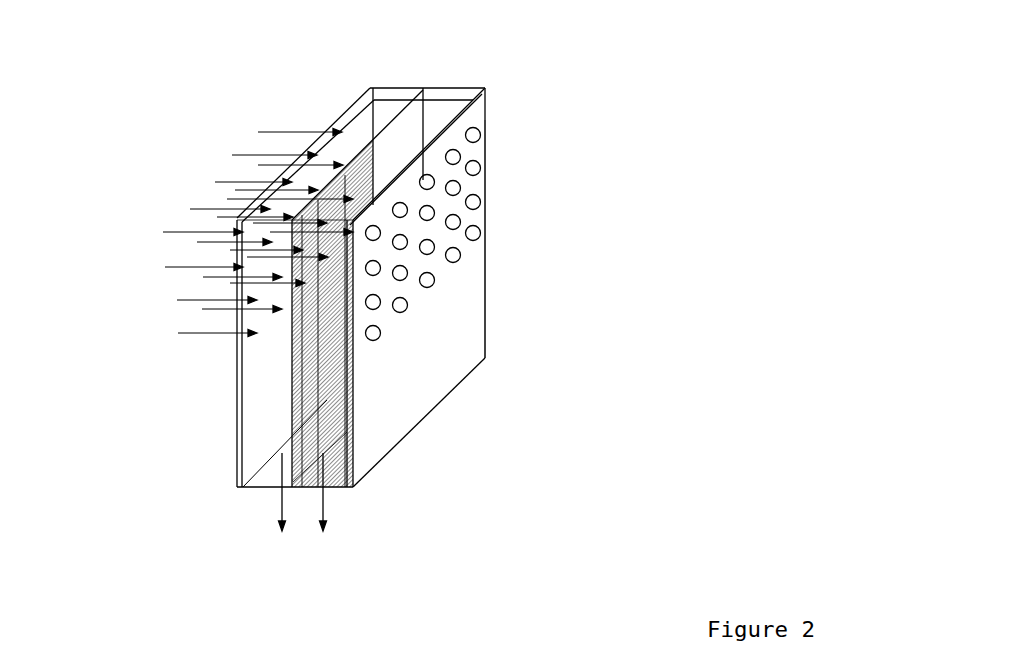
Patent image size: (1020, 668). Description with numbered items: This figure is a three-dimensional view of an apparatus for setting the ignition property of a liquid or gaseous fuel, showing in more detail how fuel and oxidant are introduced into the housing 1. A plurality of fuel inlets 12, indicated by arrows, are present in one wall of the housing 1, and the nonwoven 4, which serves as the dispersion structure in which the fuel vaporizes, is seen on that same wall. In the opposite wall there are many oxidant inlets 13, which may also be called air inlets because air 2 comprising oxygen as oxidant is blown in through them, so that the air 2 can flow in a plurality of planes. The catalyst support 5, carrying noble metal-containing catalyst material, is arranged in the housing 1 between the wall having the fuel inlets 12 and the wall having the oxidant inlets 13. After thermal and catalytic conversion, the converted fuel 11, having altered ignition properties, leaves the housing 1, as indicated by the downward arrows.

The housing 1 is at (485, 89).
The air 2 is at (519, 239).
The nonwoven 4 is at (258, 422).
The catalyst support 5 is at (372, 142).
The converted fuel 11 is at (320, 537).
The fuel inlets 12 is at (237, 218).
The oxidant inlets 13 is at (458, 254).